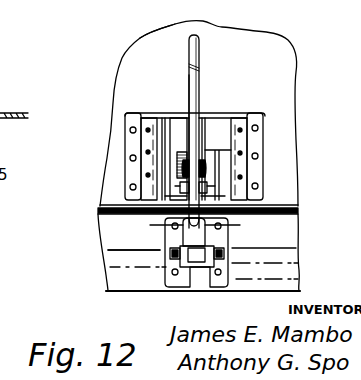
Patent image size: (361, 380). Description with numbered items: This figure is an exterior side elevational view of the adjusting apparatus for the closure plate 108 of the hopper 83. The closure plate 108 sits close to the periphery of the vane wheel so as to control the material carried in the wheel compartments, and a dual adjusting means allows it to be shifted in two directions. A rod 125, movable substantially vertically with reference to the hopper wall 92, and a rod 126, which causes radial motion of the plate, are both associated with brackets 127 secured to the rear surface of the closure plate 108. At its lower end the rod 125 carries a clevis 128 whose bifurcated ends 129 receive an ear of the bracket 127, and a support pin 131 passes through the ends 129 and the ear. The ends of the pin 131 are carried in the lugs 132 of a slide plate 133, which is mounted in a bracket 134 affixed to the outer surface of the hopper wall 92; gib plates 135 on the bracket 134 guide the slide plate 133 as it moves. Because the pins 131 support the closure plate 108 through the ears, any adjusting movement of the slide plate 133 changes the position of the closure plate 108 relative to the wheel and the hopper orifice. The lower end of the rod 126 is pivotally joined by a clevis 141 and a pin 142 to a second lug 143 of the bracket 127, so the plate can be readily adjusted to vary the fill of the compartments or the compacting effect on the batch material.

The hopper 83 is at (160, 50).
The hopper wall 92 is at (132, 62).
The closure plate 108 is at (128, 226).
The rod 125 is at (199, 53).
The rod 126 is at (199, 88).
The bracket 127 is at (228, 233).
The clevis 128 is at (201, 172).
The bifurcated ends 129 is at (173, 194).
The support pin 131 is at (265, 196).
The lugs 132 is at (160, 167).
The slide plate 133 is at (188, 153).
The bracket 134 is at (148, 112).
The gib plates 135 is at (148, 142).
The clevis 141 is at (172, 224).
The pin 142 is at (173, 253).
The second lug 143 is at (196, 252).